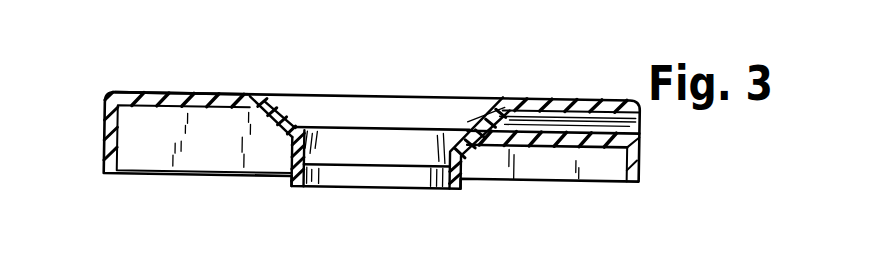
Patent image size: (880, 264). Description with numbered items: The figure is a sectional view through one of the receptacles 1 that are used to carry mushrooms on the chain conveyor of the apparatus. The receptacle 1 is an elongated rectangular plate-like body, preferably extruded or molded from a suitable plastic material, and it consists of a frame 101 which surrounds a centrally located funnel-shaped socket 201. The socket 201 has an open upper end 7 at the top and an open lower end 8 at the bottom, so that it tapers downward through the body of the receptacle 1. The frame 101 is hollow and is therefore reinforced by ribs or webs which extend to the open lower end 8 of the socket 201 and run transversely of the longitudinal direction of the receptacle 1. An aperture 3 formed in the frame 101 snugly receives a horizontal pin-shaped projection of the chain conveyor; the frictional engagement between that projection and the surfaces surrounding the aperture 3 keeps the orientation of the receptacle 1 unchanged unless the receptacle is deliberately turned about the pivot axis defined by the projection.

The receptacle 1 is at (556, 90).
The frame 101 is at (158, 98).
The funnel-shaped socket 201 is at (287, 145).
The open upper end 7 is at (441, 108).
The open lower end 8 is at (415, 178).
The aperture 3 is at (608, 125).